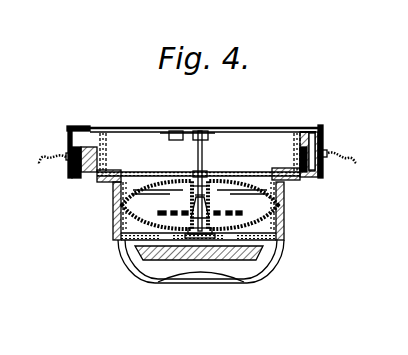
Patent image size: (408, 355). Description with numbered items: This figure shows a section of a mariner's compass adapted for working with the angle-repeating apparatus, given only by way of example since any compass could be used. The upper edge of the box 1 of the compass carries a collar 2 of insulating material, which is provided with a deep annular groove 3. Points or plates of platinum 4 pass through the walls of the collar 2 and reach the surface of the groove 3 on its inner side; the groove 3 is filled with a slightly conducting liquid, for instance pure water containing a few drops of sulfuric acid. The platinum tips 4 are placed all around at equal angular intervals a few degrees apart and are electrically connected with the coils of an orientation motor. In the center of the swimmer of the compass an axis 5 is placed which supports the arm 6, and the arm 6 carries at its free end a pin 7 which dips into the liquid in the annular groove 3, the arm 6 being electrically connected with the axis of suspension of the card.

The box 1 is at (111, 212).
The collar 2 is at (72, 179).
The annular groove 3 is at (83, 147).
The platinum tips 4 is at (327, 150).
The axis 5 is at (197, 158).
The arm 6 is at (252, 135).
The pin 7 is at (313, 136).